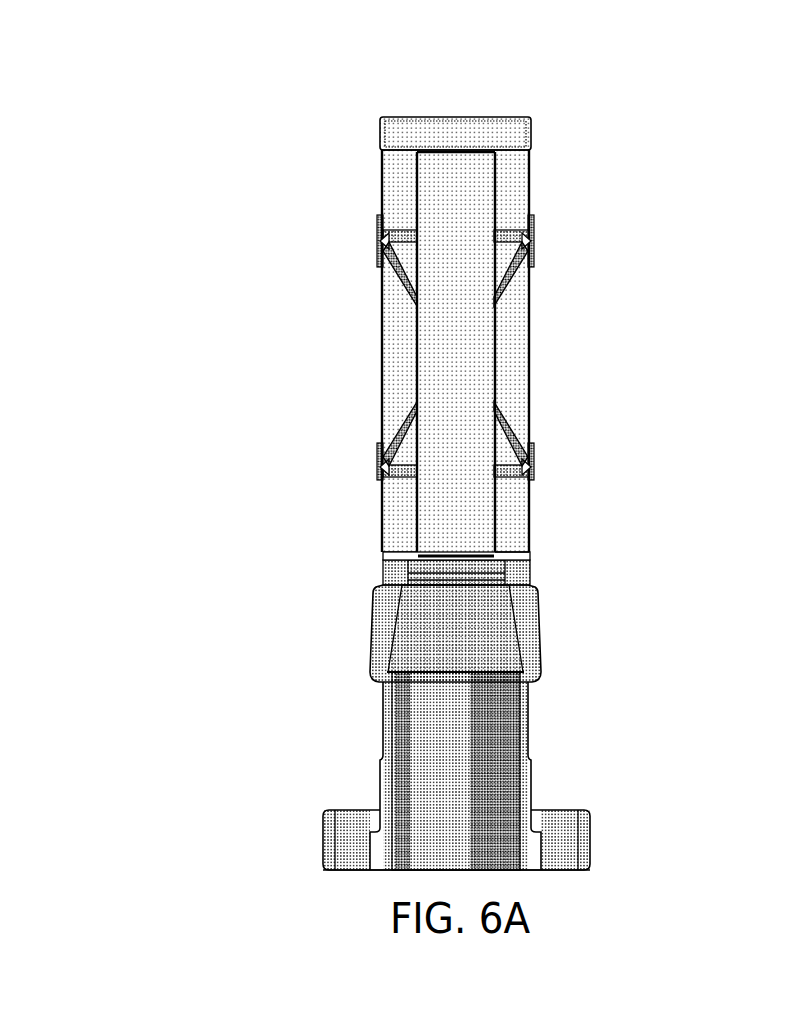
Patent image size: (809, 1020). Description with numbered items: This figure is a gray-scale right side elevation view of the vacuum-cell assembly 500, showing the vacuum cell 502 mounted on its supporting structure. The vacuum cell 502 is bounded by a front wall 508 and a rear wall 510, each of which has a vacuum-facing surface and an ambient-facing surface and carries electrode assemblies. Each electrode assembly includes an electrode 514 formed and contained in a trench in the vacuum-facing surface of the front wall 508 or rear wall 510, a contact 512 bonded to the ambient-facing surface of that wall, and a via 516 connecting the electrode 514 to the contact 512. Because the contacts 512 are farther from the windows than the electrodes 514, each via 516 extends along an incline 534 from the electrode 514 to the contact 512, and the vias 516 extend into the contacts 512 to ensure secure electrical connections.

The vacuum-cell assembly 500 is at (640, 52).
The vacuum cell 502 is at (541, 548).
The front wall 508 is at (390, 168).
The rear wall 510 is at (520, 190).
The contact 512 is at (532, 240).
The electrode 514 is at (497, 345).
The via 516 is at (513, 275).
The incline 534 is at (400, 282).